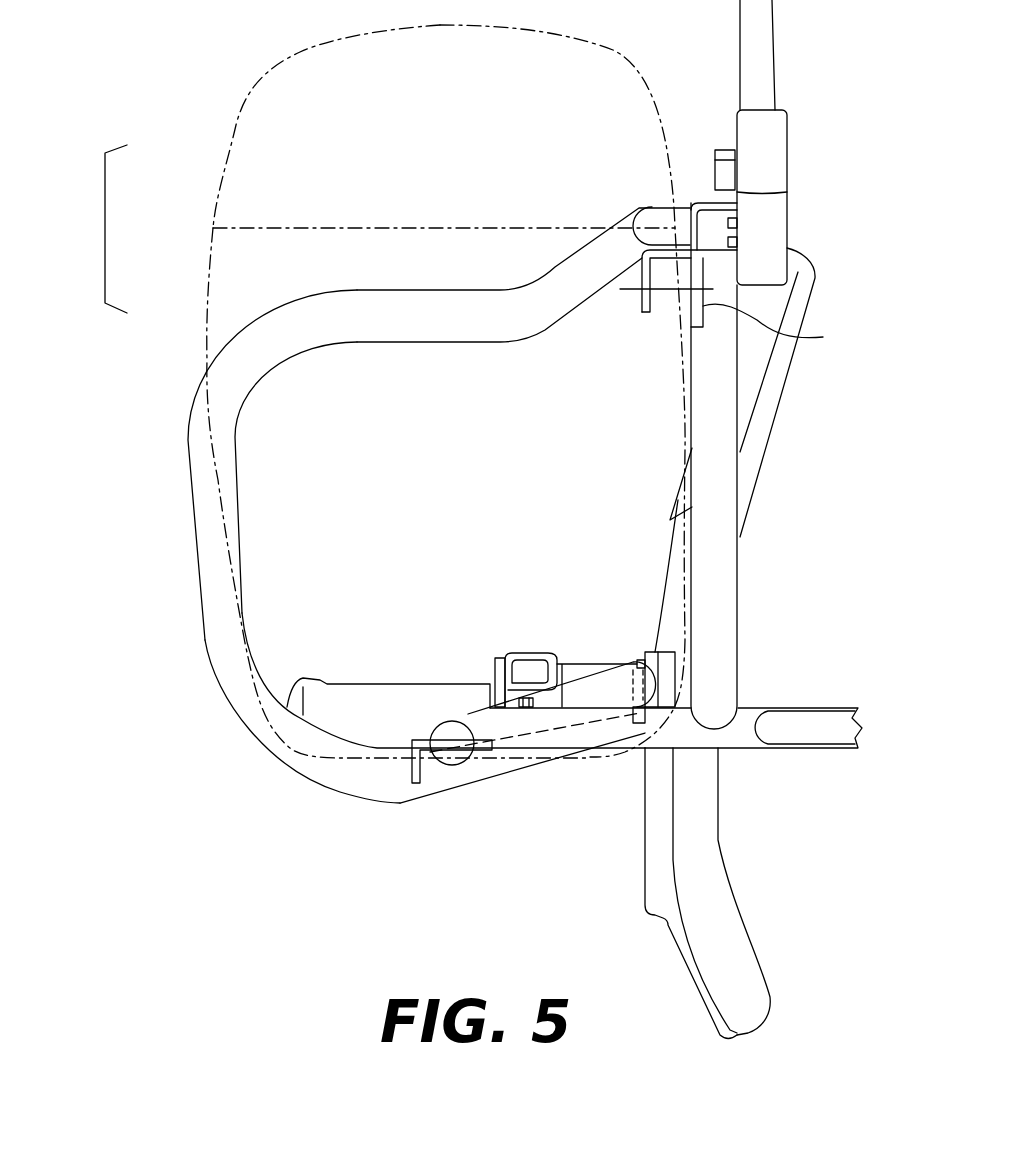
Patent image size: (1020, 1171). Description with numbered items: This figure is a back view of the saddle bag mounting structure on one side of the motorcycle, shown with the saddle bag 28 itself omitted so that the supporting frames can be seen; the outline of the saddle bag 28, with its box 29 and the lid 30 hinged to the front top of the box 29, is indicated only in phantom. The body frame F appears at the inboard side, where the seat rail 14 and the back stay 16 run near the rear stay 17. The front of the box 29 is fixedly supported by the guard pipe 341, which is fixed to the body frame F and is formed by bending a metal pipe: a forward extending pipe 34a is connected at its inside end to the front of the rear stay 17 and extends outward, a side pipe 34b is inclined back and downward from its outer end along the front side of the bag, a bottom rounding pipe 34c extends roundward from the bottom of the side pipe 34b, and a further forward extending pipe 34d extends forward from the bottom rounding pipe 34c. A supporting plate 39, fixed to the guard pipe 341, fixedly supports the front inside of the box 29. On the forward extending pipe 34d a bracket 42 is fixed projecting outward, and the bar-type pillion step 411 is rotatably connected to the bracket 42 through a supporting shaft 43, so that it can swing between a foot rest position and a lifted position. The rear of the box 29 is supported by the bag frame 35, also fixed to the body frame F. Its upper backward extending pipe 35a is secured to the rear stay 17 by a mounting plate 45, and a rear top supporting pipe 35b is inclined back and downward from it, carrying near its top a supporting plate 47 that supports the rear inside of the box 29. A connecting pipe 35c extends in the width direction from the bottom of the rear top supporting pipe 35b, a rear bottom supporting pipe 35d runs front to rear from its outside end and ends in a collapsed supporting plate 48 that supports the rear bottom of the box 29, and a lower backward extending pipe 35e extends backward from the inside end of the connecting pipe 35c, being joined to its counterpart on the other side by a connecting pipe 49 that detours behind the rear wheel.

The seat rail 14 is at (777, 372).
The back stay 16 is at (720, 908).
The rear stay 17 is at (780, 142).
The saddle bag 28 is at (105, 228).
The box 29 is at (203, 315).
The lid 30 is at (225, 145).
The forward extending pipe 34a is at (422, 307).
The side pipe 34b is at (205, 606).
The bottom rounding pipe 34c is at (372, 805).
The forward extending pipe 34d is at (625, 662).
The guard pipe 341 is at (283, 788).
The bag frame 35 is at (744, 600).
The upper backward extending pipe 35a is at (697, 197).
The rear top supporting pipe 35b is at (720, 572).
The connecting pipe 35c is at (562, 755).
The rear bottom supporting pipe 35d is at (450, 721).
The lower backward extending pipe 35e is at (750, 750).
The supporting plate 39 is at (630, 307).
The pillion step 411 is at (343, 690).
The bracket 42 is at (528, 653).
The supporting shaft 43 is at (525, 712).
The mounting plate 45 is at (730, 135).
The supporting plate 47 is at (780, 328).
The supporting plate 48 is at (465, 766).
The connecting pipe 49 is at (830, 750).
The body frame F is at (771, 432).